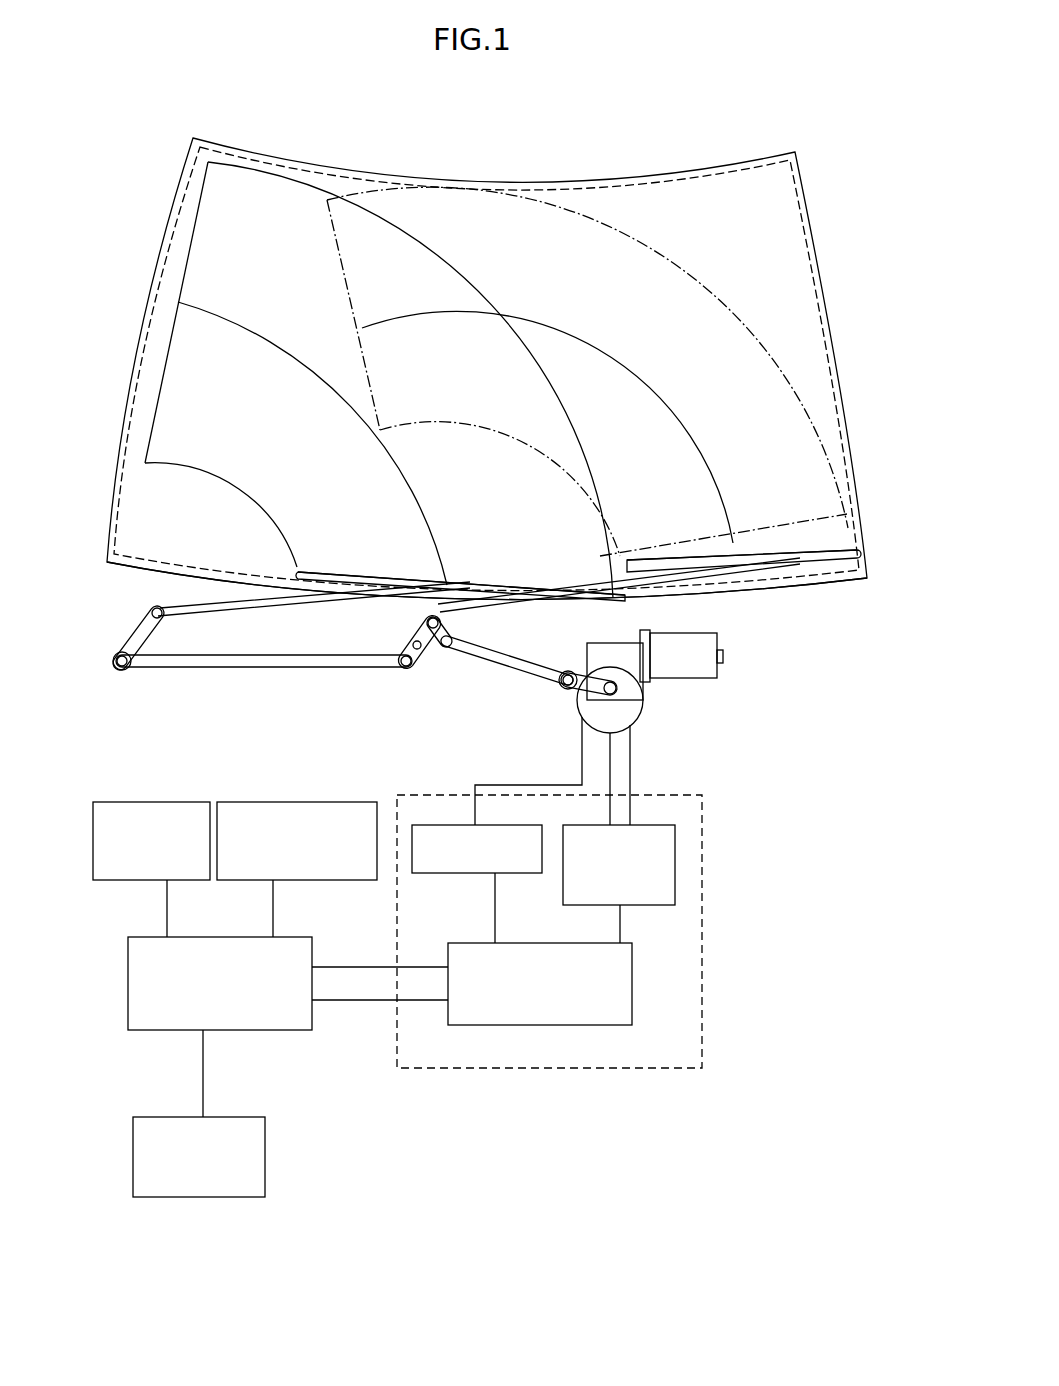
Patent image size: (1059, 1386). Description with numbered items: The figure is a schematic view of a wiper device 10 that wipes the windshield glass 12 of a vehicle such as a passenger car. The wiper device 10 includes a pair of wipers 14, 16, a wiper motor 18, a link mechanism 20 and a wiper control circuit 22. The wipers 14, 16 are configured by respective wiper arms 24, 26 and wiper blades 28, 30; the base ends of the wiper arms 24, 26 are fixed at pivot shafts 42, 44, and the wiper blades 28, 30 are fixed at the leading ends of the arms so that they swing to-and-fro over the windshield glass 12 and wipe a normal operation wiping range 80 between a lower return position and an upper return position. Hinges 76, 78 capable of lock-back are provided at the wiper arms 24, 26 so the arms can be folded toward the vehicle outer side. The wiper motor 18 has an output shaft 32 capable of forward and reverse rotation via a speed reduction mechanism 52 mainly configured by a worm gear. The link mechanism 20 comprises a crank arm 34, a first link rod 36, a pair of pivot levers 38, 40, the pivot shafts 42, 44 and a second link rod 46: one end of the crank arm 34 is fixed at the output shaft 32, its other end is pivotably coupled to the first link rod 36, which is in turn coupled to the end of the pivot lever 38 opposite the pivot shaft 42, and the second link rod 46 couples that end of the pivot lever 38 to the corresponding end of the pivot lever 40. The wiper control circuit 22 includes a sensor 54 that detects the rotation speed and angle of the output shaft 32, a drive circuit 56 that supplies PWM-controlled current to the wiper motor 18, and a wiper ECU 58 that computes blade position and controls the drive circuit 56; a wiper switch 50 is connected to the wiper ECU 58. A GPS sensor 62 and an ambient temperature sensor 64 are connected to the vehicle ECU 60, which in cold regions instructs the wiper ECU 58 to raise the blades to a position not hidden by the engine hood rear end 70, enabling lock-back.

The wiper device 10 is at (658, 155).
The windshield glass 12 is at (520, 178).
The wiper 14 is at (805, 556).
The wiper 16 is at (545, 585).
The wiper motor 18 is at (724, 656).
The link mechanism 20 is at (430, 679).
The wiper control circuit 22 is at (702, 882).
The wiper arm 24 is at (622, 563).
The wiper arm 26 is at (203, 590).
The wiper blade 28 is at (758, 568).
The wiper blade 30 is at (493, 580).
The output shaft 32 is at (643, 712).
The crank arm 34 is at (576, 700).
The first link rod 36 is at (490, 656).
The pivot lever 38 is at (412, 645).
The pivot lever 40 is at (113, 650).
The pivot shaft 42 is at (427, 622).
The pivot shaft 44 is at (150, 612).
The second link rod 46 is at (268, 668).
The wiper switch 50 is at (133, 1156).
The speed reduction mechanism 52 is at (655, 687).
The sensor 54 is at (433, 875).
The drive circuit 56 is at (657, 905).
The wiper ECU 58 is at (632, 1003).
The vehicle ECU 60 is at (308, 937).
The GPS sensor 62 is at (168, 802).
The ambient temperature sensor 64 is at (275, 802).
The engine hood rear end 70 is at (140, 546).
The hinge 76 is at (445, 652).
The hinge 78 is at (190, 668).
The normal operation wiping range 80 is at (232, 325).